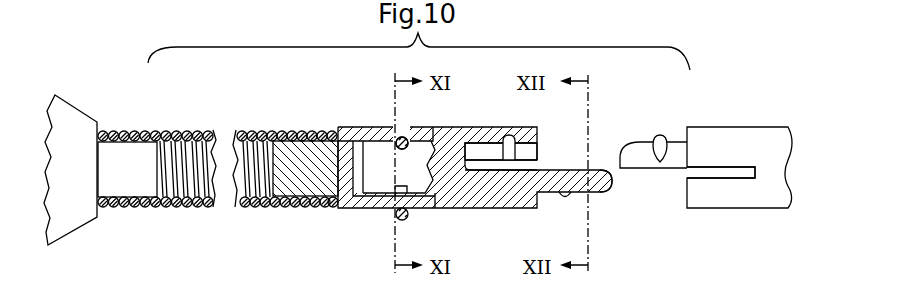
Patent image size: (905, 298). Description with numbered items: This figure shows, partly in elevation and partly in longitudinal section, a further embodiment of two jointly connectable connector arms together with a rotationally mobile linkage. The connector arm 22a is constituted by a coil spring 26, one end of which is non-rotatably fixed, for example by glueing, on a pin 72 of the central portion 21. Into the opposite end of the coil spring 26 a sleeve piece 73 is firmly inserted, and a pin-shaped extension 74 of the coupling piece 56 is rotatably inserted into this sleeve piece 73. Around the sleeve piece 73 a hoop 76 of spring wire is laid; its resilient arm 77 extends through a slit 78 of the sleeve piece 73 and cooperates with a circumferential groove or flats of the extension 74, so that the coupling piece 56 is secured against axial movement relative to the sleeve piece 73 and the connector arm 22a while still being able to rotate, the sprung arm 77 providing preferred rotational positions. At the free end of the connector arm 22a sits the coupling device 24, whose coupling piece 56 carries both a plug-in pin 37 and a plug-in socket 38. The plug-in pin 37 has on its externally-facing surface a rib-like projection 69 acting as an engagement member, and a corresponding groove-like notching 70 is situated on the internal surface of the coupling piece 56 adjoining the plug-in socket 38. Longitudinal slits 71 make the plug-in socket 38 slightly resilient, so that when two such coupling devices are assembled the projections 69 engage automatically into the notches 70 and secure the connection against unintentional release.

The central portion 21 is at (87, 123).
The connector arm 22a is at (203, 92).
The coupling device 24 is at (632, 140).
The coil spring 26 is at (218, 170).
The plug-in pin 37 is at (633, 160).
The plug-in socket 38 is at (528, 150).
The coupling piece 56 is at (480, 195).
The projection 69 is at (565, 198).
The notching 70 is at (507, 138).
The longitudinal slits 71 is at (519, 165).
The pin 72 is at (133, 180).
The sleeve piece 73 is at (355, 198).
The pin-shaped extension 74 is at (390, 180).
The hoop 76 is at (407, 218).
The resilient arm 77 is at (397, 139).
The slit 78 is at (404, 137).